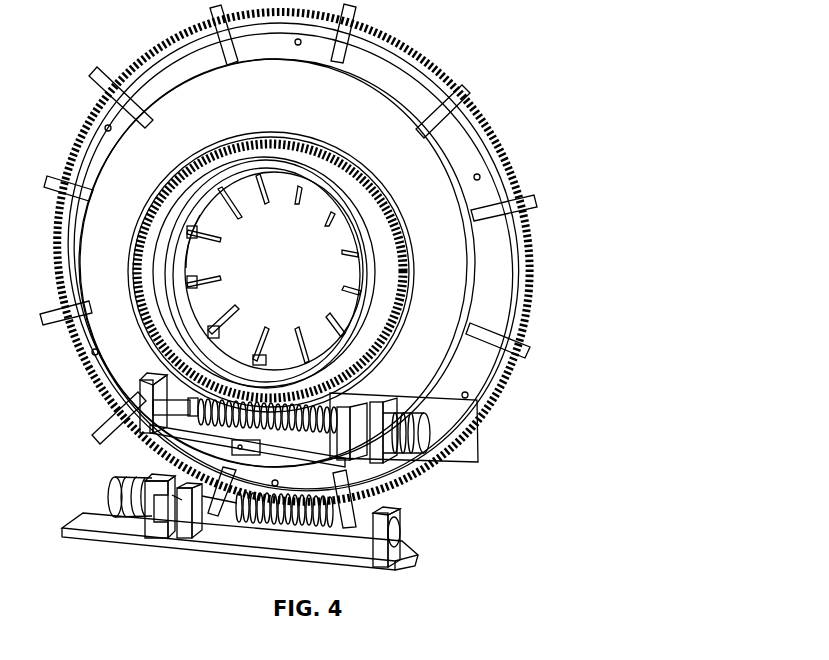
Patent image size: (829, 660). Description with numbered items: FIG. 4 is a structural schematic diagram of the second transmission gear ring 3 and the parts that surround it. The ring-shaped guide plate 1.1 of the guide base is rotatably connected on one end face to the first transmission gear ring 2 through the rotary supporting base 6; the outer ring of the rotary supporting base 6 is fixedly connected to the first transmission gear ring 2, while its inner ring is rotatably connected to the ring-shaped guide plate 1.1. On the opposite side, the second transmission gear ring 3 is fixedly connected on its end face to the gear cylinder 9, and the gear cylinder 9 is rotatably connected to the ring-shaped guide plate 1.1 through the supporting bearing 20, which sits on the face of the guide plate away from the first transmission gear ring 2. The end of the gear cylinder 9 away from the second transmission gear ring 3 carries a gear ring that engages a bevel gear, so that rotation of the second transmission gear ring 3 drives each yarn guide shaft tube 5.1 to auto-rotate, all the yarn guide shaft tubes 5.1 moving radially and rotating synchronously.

The first transmission gear ring 2 is at (308, 293).
The rotary supporting base 6 is at (321, 262).
The ring-shaped guide plate 1.1 is at (331, 263).
The yarn guide shaft tube 5.1 is at (305, 224).
The second transmission gear ring 3 is at (259, 213).
The supporting bearing 20 is at (315, 200).
The gear cylinder 9 is at (202, 228).